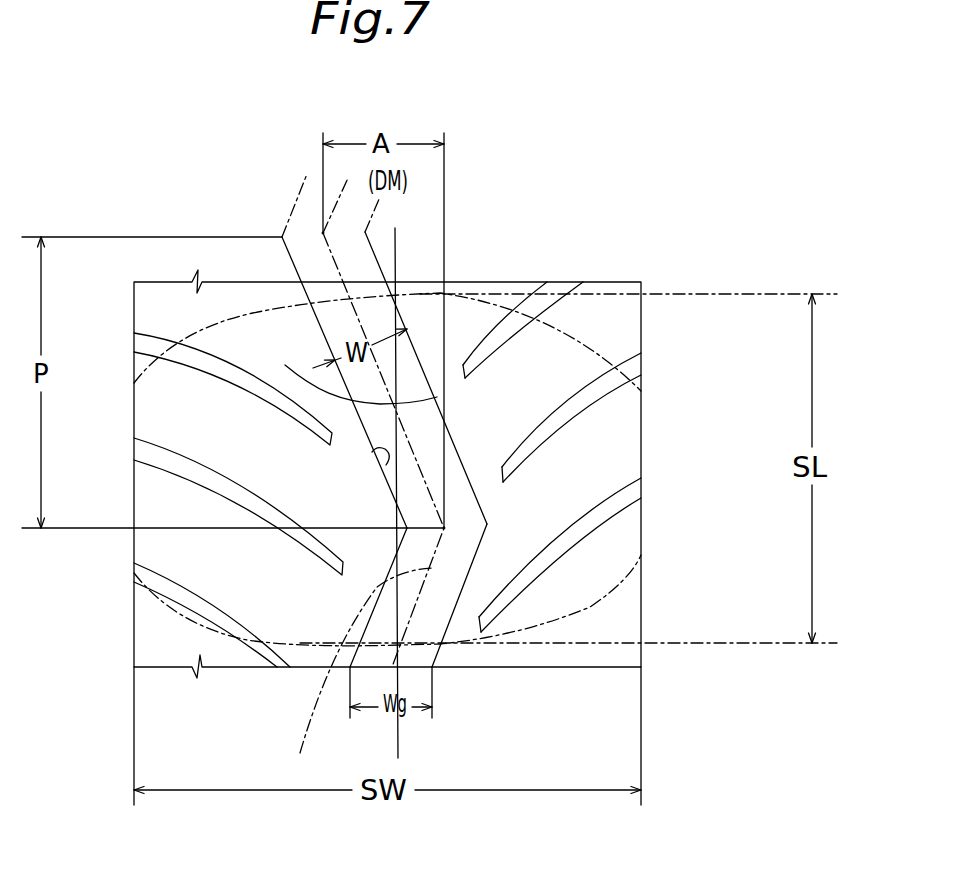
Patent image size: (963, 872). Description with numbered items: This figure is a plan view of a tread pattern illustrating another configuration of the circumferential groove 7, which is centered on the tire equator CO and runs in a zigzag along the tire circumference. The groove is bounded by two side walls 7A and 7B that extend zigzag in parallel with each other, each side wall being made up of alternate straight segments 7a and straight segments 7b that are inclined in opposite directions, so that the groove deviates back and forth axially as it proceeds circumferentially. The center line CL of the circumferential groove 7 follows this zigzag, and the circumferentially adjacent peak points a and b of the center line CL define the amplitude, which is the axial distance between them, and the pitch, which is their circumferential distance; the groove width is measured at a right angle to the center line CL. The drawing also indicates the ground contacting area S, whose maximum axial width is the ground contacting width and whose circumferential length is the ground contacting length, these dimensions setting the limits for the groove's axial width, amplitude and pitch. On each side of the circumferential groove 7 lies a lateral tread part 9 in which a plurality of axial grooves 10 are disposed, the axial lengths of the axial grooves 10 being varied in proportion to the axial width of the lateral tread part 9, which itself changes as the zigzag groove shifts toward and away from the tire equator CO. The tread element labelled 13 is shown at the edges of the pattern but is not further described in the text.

The circumferential groove 7 is at (403, 420).
The side wall 7A is at (353, 368).
The side wall 7B is at (386, 465).
The straight segment 7a is at (462, 460).
The straight segment 7b is at (465, 585).
The lateral tread part 9 is at (178, 403).
The axial groove 10 is at (592, 390).
The tread block / tread portion 13 is at (134, 485).
The peak point a is at (320, 231).
The peak point b is at (444, 528).
The ground contacting area S is at (610, 597).
The center line CL is at (362, 674).
The tire equator CO is at (398, 750).